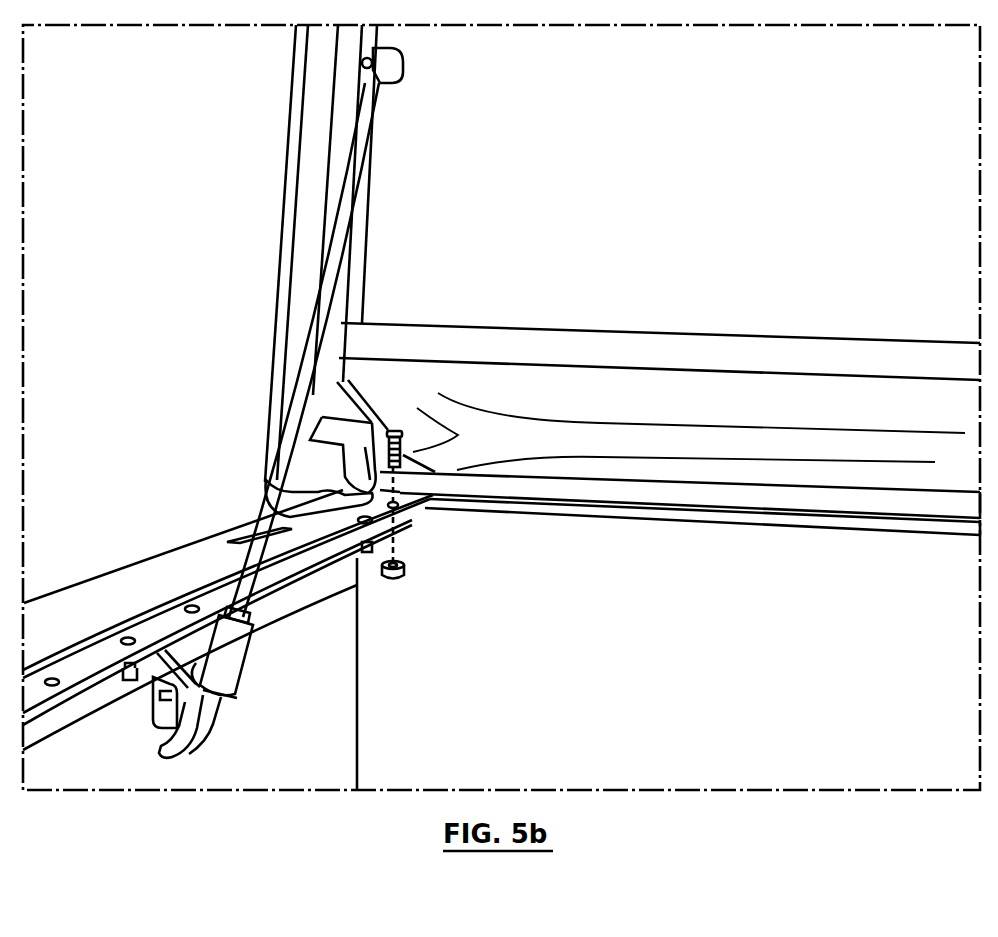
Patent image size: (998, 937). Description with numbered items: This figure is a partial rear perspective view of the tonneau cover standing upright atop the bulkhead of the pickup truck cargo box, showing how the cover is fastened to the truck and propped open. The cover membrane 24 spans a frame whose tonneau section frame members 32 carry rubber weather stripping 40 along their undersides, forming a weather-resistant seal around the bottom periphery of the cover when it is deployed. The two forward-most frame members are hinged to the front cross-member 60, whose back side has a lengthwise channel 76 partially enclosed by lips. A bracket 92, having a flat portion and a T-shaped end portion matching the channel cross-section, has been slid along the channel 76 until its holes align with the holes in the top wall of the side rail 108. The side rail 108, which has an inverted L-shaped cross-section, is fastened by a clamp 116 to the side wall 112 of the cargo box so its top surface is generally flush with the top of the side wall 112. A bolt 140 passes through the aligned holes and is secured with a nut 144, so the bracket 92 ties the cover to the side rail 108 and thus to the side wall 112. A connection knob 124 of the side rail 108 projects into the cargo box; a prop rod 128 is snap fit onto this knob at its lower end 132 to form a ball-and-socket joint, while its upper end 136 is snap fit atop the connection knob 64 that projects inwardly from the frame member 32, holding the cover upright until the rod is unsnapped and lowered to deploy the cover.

The cover membrane 24 is at (714, 206).
The tonneau section frame member 32 is at (292, 242).
The rubber weather stripping 40 is at (322, 173).
The front cross-member 60 is at (793, 520).
The connection knob 64 is at (367, 70).
The channel 76 is at (748, 512).
The bracket 92 is at (343, 528).
The side rail 108 is at (222, 598).
The side wall 112 is at (165, 558).
The clamp 116 is at (208, 722).
The connection knob 124 is at (197, 672).
The prop rod 128 is at (278, 480).
The lower end 132 is at (238, 658).
The upper end 136 is at (385, 48).
The bolt 140 is at (402, 447).
The nut 144 is at (405, 570).